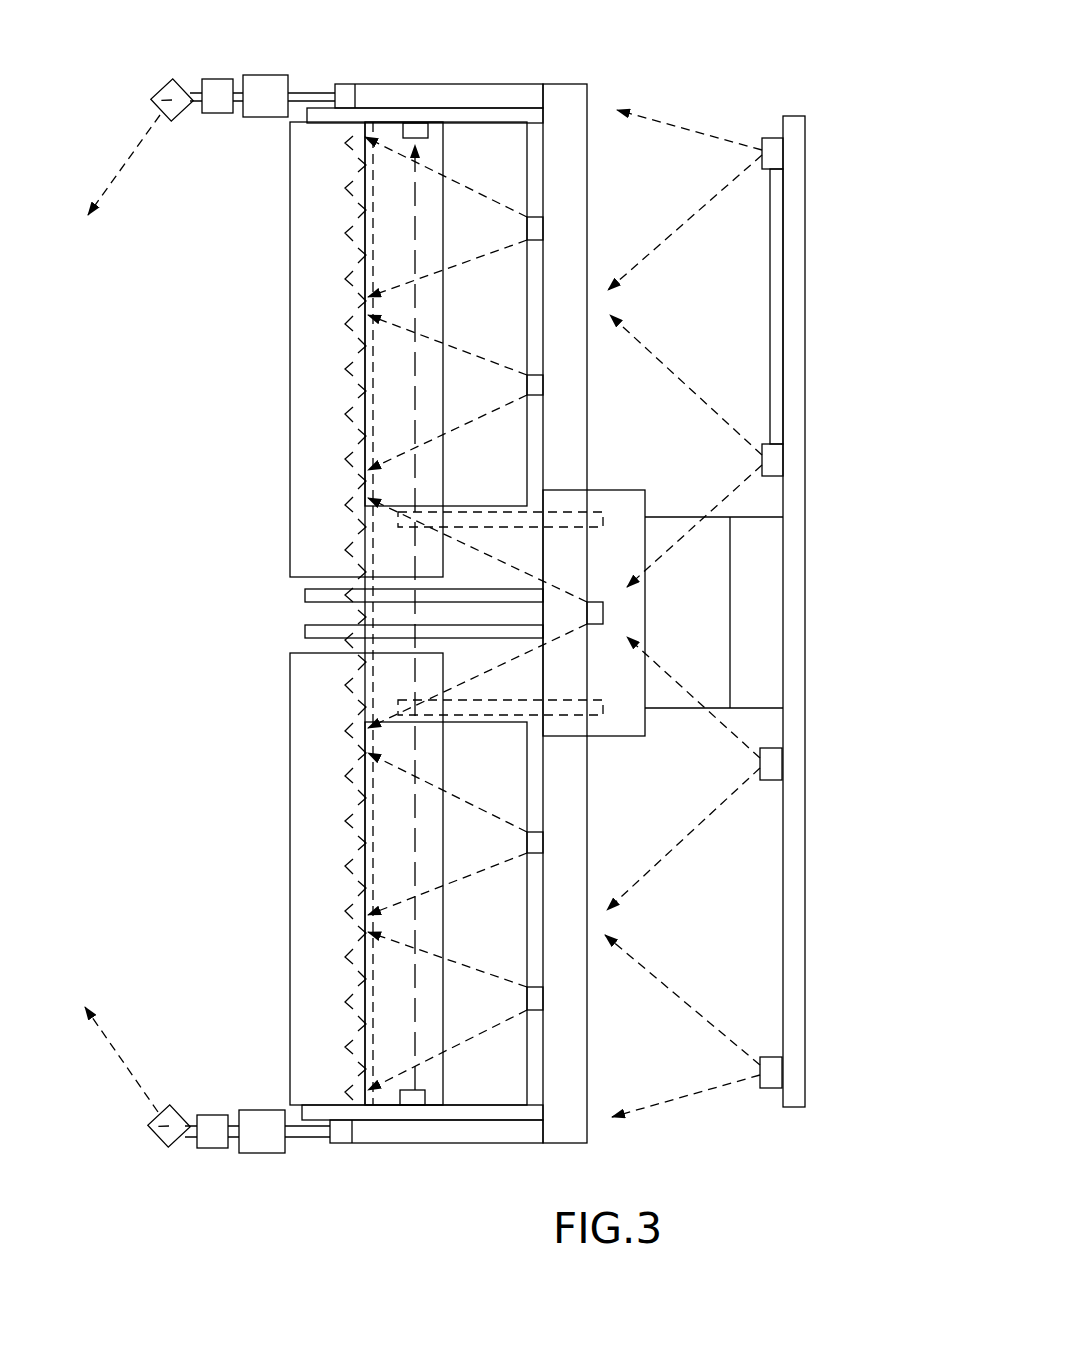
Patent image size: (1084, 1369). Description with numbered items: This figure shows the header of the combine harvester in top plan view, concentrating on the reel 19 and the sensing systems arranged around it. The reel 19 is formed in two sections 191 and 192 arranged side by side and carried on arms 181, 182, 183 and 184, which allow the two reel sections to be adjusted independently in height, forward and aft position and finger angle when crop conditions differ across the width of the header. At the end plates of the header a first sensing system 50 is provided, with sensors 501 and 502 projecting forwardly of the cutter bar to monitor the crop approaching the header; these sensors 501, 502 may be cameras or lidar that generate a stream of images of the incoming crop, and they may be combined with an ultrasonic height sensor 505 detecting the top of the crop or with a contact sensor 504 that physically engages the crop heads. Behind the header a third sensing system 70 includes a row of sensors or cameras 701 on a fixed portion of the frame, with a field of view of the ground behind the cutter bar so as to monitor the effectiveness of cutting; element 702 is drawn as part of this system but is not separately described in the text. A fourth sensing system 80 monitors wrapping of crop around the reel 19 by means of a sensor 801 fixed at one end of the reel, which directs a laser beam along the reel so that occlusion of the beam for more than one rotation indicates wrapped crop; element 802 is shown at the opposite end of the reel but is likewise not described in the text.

The reel 19 is at (284, 422).
The reel section 191 is at (305, 488).
The reel section 192 is at (313, 725).
The arm 181 is at (317, 1115).
The arm 182 is at (327, 630).
The arm 183 is at (325, 595).
The arm 184 is at (445, 115).
The fourth sensing system 80 is at (429, 1124).
The sensor 801 is at (408, 1100).
The upper light receiving element 802 is at (415, 130).
The first sensing system 50 is at (104, 1006).
The sensor 501 is at (155, 1140).
The sensor 502 is at (173, 98).
The contact sensor 504 is at (265, 103).
The ultrasonic height sensor 505 is at (214, 92).
The third sensing system 70 is at (833, 972).
The camera 701 is at (770, 1070).
The reflector panel 702 is at (793, 1077).